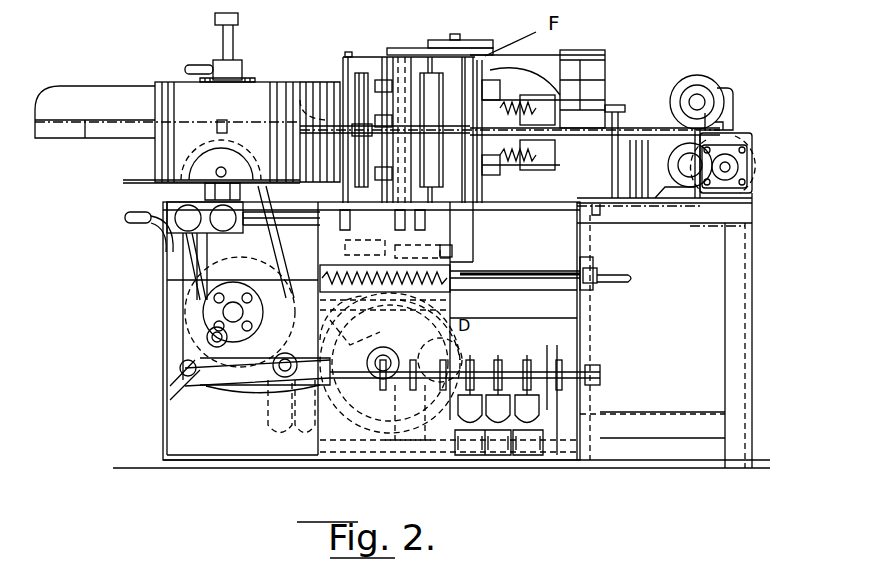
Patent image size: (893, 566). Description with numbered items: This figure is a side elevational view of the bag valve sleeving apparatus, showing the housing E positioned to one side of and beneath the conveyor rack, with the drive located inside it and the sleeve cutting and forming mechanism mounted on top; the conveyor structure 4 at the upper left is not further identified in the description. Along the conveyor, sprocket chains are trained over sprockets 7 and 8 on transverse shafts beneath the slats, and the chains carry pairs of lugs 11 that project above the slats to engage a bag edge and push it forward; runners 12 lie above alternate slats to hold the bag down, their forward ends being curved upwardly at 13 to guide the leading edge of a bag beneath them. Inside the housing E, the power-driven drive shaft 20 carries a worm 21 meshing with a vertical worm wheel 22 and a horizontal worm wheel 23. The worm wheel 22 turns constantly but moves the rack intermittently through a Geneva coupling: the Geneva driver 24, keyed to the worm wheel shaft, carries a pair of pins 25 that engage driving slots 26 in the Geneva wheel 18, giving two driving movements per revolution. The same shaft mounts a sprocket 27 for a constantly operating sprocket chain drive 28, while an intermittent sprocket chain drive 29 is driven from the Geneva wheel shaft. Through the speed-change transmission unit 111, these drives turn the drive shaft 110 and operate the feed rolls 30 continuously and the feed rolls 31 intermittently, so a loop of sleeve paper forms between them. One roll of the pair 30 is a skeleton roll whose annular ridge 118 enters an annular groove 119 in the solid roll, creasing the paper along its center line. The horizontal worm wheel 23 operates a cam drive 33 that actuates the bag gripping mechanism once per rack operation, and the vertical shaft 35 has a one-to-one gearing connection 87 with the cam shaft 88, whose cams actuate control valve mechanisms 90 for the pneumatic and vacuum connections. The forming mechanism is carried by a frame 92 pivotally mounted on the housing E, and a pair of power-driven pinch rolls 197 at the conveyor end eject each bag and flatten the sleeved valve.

The housing 4 is at (265, 92).
The sprocket 7 is at (755, 155).
The sprocket 8 is at (180, 160).
The lugs 11 is at (599, 216).
The runners 12 is at (331, 125).
The upwardly curved forward ends 13 is at (305, 98).
The Geneva wheel 18 is at (308, 302).
The drive shaft 20 is at (535, 272).
The worm 21 is at (342, 258).
The vertical worm wheel 22 is at (456, 352).
The horizontal worm wheel 23 is at (452, 271).
The Geneva driver 24 is at (420, 346).
The pins 25 is at (462, 358).
The driving slots 26 is at (295, 426).
The sprocket 27 is at (448, 439).
The constantly operating sprocket chain drive 28 is at (255, 388).
The intermittent sprocket chain drive 29 is at (240, 392).
The feed rolls 30 is at (380, 80).
The feed rolls 31 is at (440, 75).
The cam drive 33 is at (458, 248).
The vertical shaft 35 is at (382, 330).
The gearing connection 87 is at (410, 412).
The cam shaft 88 is at (538, 376).
The control valve mechanisms 90 is at (468, 456).
The frame 92 is at (418, 48).
The drive shaft 110 is at (316, 220).
The speed-change transmission unit 111 is at (170, 232).
The annular ridge 118 is at (393, 127).
The annular groove 119 is at (358, 130).
The pinch rolls 197 is at (685, 92).
The housing E is at (580, 332).